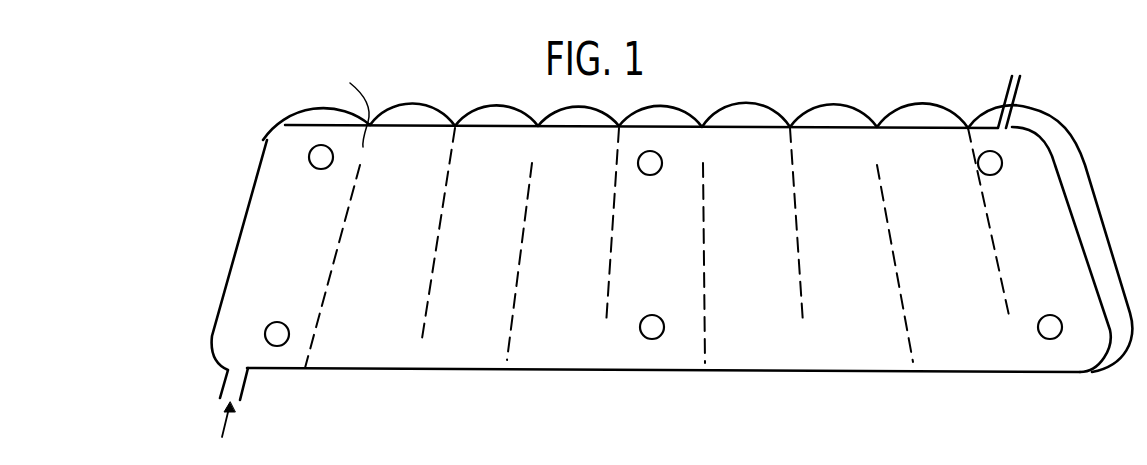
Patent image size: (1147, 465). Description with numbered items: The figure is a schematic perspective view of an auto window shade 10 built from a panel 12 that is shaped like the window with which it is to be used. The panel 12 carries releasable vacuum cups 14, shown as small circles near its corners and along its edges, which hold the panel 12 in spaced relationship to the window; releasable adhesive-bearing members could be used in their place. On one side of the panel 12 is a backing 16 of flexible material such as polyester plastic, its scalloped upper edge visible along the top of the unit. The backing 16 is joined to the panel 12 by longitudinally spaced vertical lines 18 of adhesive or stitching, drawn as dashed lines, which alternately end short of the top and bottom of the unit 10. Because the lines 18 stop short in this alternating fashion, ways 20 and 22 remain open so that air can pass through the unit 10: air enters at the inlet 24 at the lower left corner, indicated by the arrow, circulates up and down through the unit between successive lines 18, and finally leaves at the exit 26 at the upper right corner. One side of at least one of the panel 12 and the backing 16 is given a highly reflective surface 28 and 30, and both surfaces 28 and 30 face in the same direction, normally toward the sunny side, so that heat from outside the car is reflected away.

The auto window shade 10 is at (472, 368).
The panel 12 is at (240, 233).
The releasable vacuum cups 14 is at (309, 157).
The backing 16 is at (757, 103).
The vertical lines 18 is at (322, 298).
The way 20 is at (350, 104).
The way 22 is at (417, 342).
The inlet 24 is at (228, 383).
The exit 26 is at (1020, 92).
The highly reflective surface 28 is at (545, 350).
The highly reflective surface 30 is at (497, 108).